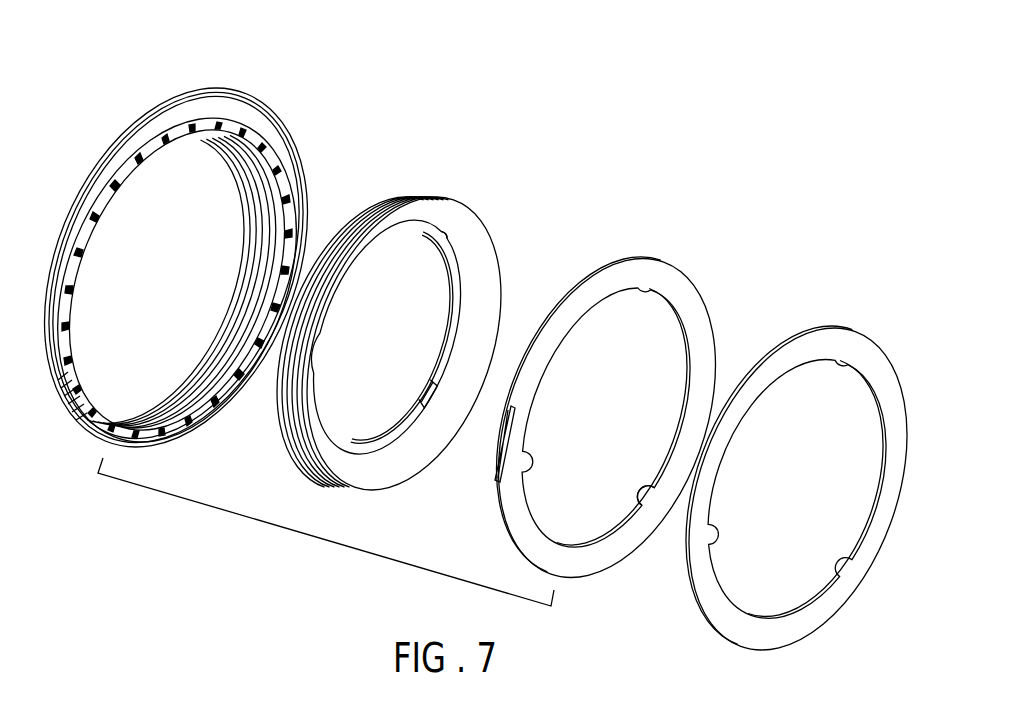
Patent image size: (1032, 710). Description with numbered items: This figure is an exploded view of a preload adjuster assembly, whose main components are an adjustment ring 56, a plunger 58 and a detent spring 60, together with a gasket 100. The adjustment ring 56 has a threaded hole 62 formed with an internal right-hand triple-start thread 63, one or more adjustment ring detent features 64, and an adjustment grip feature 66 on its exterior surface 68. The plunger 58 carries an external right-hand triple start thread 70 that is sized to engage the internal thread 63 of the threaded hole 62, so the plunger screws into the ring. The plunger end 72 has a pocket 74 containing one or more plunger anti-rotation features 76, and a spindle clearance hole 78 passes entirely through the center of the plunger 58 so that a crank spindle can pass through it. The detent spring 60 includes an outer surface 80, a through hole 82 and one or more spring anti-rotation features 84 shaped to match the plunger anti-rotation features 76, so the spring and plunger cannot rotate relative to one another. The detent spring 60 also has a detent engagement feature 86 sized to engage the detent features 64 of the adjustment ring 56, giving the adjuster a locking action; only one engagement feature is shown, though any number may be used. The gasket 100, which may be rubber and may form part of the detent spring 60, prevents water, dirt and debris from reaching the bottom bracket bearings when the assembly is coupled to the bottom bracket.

The adjustment ring 56 is at (137, 102).
The plunger 58 is at (405, 193).
The detent spring 60 is at (610, 248).
The threaded hole 62 is at (222, 318).
The internal right-hand triple-start thread 63 is at (217, 347).
The adjustment ring detent features 64 is at (192, 422).
The adjustment grip feature 66 is at (77, 430).
The exterior surface 68 is at (185, 97).
The external right-hand triple start thread 70 is at (298, 450).
The plunger end 72 is at (468, 227).
The pocket 74 is at (483, 297).
The plunger anti-rotation features 76 is at (437, 423).
The spindle clearance hole 78 is at (455, 347).
The outer surface 80 is at (625, 260).
The through hole 82 is at (680, 448).
The spring anti-rotation features 84 is at (643, 490).
The detent engagement feature 86 is at (492, 482).
The gasket 100 is at (797, 327).